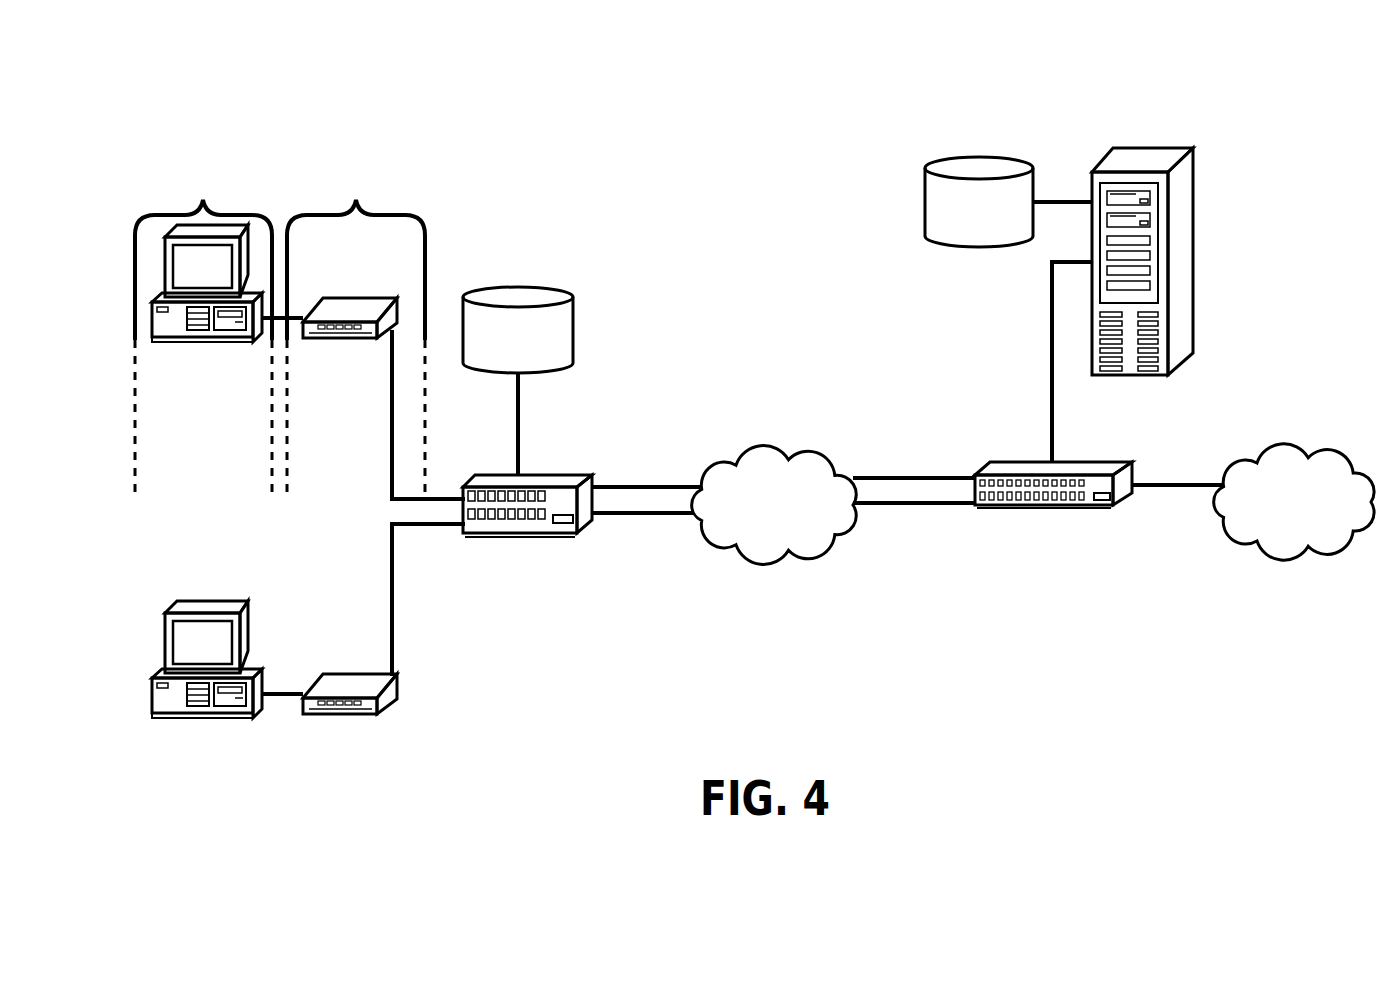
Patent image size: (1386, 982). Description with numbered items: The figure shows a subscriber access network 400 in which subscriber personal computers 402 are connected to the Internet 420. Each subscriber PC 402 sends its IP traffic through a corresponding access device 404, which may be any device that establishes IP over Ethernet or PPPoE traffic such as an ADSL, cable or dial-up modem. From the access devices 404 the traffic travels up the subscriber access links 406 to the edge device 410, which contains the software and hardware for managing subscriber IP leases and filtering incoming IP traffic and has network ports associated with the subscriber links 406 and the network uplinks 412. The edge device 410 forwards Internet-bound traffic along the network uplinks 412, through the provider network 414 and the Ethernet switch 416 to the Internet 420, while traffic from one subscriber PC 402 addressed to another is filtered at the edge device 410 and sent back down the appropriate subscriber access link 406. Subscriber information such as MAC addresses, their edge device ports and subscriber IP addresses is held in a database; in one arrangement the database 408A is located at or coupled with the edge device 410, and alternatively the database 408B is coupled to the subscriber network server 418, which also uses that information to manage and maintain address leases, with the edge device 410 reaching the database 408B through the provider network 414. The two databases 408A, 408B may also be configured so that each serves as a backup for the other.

The subscriber access network 400 is at (731, 66).
The subscriber personal computer 402 is at (219, 333).
The access device 404 is at (356, 336).
The subscriber access link 406 is at (441, 502).
The database 408A is at (547, 283).
The database 408B is at (1010, 156).
The edge device 410 is at (580, 524).
The network uplink 412 is at (650, 510).
The provider network 414 is at (843, 537).
The Ethernet switch 416 is at (1120, 502).
The subscriber network server 418 is at (1163, 147).
The Internet 420 is at (1275, 448).